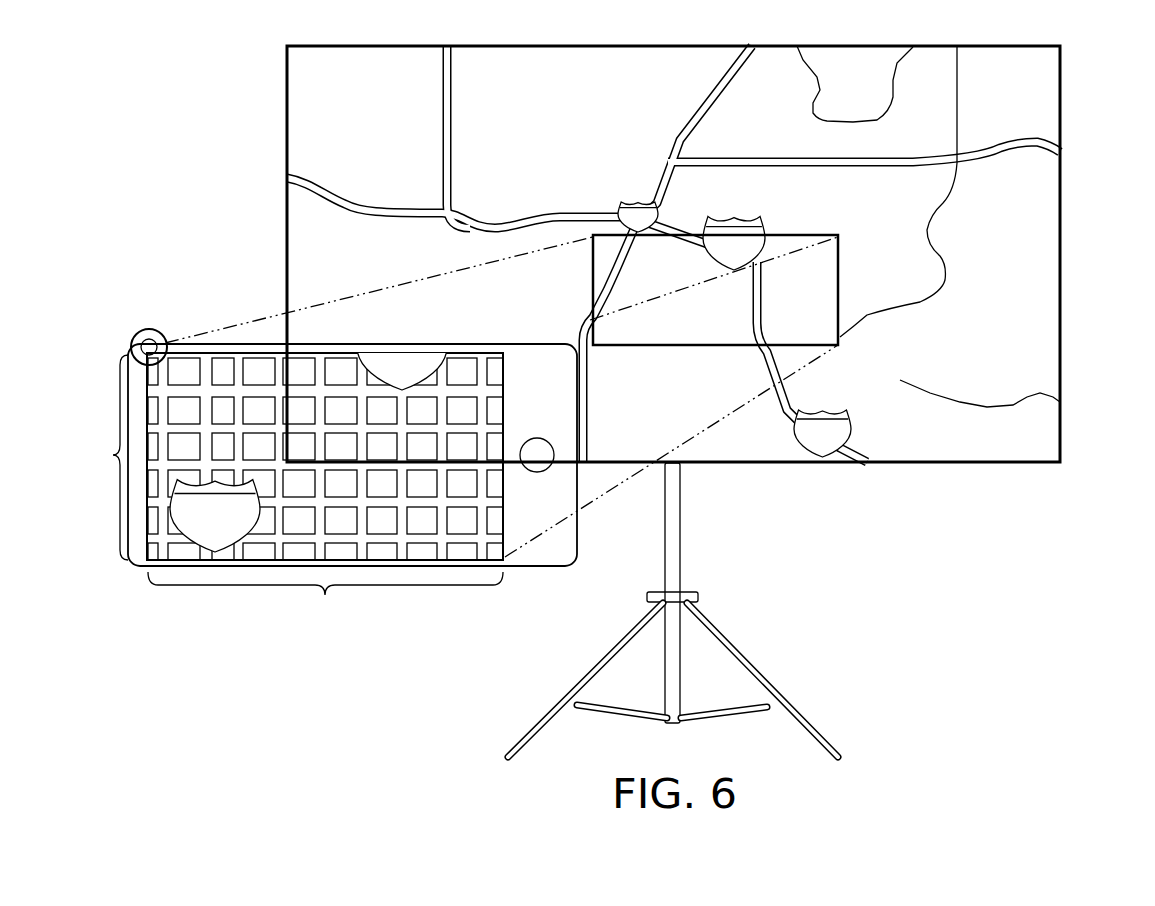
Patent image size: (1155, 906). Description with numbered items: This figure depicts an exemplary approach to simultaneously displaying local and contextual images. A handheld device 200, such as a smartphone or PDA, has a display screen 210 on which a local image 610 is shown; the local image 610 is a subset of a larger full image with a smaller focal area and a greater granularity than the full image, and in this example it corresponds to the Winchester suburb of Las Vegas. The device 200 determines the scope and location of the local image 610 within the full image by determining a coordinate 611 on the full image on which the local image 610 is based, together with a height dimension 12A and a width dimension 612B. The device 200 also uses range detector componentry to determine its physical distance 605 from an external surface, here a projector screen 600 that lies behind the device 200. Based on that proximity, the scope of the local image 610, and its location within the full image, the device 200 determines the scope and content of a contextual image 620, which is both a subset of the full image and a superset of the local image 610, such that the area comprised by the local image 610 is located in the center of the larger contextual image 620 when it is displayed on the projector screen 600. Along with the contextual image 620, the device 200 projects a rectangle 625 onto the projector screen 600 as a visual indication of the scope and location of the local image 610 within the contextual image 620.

The projector screen 600 is at (716, 254).
The contextual image 620 is at (1033, 213).
The rectangle 625 is at (842, 258).
The physical distance 605 is at (227, 322).
The coordinate 611 is at (140, 333).
The device 200 is at (352, 470).
The display screen 210 is at (346, 444).
The local image 610 is at (470, 413).
The height dimension 12A is at (103, 457).
The width dimension 612B is at (325, 597).